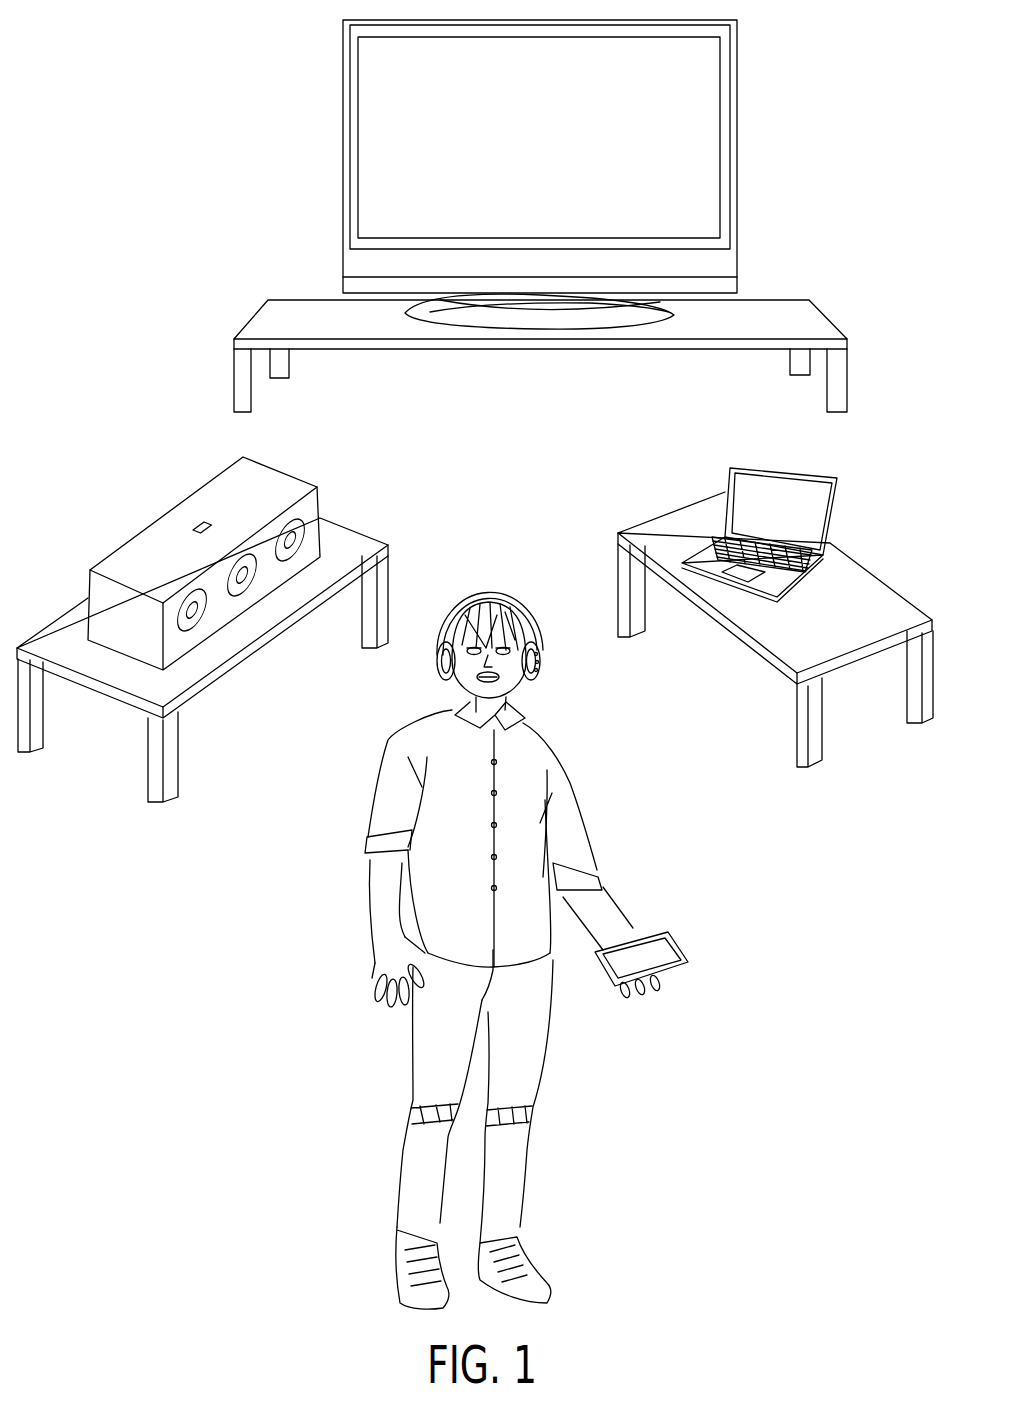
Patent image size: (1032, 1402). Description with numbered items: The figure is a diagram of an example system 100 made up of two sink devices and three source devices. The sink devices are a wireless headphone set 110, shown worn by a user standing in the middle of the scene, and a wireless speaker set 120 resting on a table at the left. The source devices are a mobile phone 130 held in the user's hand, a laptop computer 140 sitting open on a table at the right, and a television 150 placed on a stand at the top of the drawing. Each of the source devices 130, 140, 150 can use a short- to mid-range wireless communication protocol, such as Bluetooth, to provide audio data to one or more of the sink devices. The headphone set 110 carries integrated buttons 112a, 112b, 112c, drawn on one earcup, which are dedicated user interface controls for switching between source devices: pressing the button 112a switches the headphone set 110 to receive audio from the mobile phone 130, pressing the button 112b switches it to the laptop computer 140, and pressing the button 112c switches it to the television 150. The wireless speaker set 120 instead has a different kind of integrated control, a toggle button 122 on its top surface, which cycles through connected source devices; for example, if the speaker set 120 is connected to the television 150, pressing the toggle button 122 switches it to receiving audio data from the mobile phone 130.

The system 100 is at (153, 198).
The headphone set 110 is at (490, 587).
The button 112a is at (542, 660).
The button 112b is at (542, 665).
The button 112c is at (544, 670).
The wireless speaker set 120 is at (260, 485).
The toggle button 122 is at (203, 523).
The mobile phone 130 is at (687, 970).
The laptop computer 140 is at (768, 468).
The television 150 is at (737, 152).